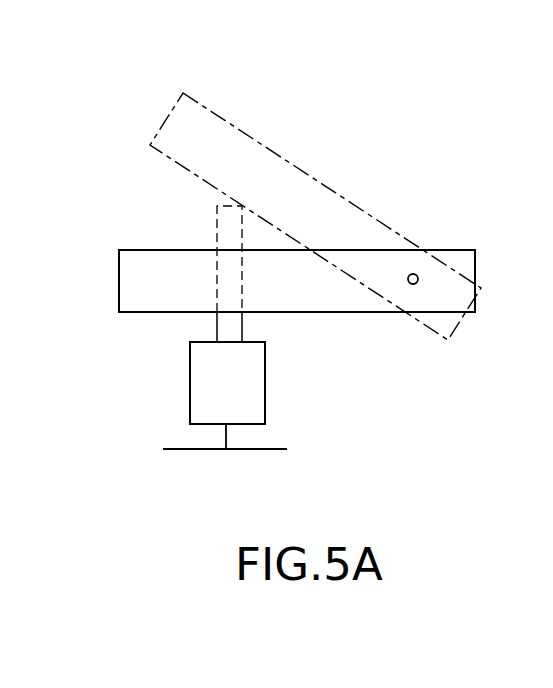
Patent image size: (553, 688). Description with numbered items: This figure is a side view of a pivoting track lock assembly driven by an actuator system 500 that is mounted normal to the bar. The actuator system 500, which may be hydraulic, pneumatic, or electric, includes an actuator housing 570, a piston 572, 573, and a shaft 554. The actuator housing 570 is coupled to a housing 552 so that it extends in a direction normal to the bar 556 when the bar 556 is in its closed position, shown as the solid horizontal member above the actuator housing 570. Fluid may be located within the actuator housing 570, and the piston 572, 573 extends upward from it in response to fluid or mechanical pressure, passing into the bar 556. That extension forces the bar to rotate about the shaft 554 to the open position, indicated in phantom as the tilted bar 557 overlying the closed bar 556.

The actuator system 500 is at (310, 445).
The housing 552 is at (197, 449).
The shaft 554 is at (418, 273).
The bar 556 is at (135, 300).
The bar 557 is at (249, 146).
The actuator housing 570 is at (245, 390).
The piston 572 is at (233, 322).
The piston 573 is at (230, 270).